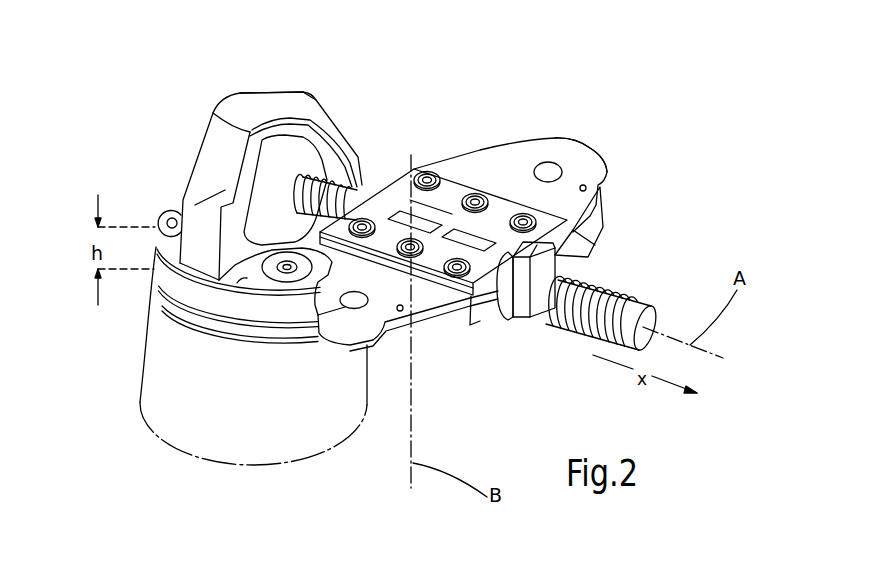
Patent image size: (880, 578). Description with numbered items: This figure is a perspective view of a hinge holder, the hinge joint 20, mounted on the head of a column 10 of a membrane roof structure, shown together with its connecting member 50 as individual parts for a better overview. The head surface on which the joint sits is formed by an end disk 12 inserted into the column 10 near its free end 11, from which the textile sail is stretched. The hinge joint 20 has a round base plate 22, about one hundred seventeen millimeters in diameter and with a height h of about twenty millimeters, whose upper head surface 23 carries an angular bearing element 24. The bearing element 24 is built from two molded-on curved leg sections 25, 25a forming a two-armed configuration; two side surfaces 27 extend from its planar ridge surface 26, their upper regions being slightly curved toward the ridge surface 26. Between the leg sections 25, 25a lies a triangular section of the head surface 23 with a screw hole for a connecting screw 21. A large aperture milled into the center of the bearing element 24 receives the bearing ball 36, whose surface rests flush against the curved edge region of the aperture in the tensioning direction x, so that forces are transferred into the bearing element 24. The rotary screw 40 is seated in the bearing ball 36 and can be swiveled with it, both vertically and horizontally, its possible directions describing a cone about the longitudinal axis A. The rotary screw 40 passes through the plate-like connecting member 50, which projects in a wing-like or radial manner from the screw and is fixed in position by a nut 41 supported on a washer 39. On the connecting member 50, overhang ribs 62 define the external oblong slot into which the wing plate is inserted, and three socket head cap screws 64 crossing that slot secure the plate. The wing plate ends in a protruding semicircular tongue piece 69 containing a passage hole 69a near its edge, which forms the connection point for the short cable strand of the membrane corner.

The column 10 is at (368, 389).
The free end 11 is at (151, 283).
The end disk 12 is at (170, 307).
The hinge joint 20 is at (350, 98).
The connecting screw 21 is at (285, 280).
The base plate 22 is at (167, 233).
The head surface of the base plate 23 is at (255, 287).
The bearing element 24 is at (357, 150).
The leg section 25 is at (243, 170).
The leg section 25a is at (318, 149).
The ridge surface 26 is at (251, 115).
The side surface 27 is at (207, 258).
The bearing ball 36 is at (278, 152).
The washer 39 is at (517, 320).
The rotary screw 40 is at (630, 292).
The nut 41 is at (550, 323).
The connecting member 50 is at (555, 138).
The overhang rib 62 is at (573, 232).
The socket head cap screw 64 is at (476, 194).
The tongue piece 69 is at (593, 153).
The passage hole 69a is at (548, 172).